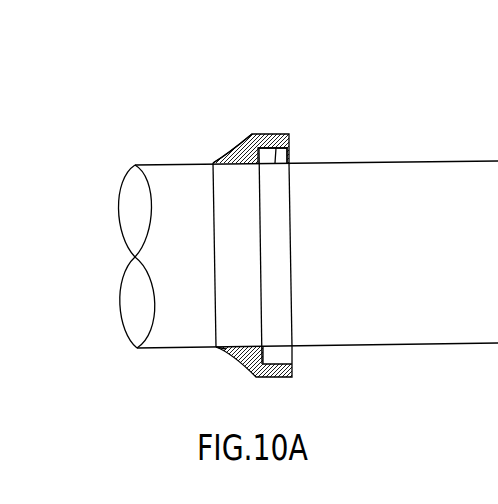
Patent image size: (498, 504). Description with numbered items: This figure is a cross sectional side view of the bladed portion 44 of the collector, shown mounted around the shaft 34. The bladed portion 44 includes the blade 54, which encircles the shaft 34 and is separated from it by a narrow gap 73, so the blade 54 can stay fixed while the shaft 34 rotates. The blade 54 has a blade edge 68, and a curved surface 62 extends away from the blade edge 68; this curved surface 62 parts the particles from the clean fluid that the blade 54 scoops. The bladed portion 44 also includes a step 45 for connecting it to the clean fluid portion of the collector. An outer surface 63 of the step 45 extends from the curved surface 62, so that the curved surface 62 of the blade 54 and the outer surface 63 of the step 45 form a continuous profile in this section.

The shaft 34 is at (416, 278).
The bladed portion 44 is at (195, 102).
The step 45 is at (290, 163).
The blade 54 is at (223, 158).
The curved surface 62 is at (238, 365).
The outer surface 63 is at (269, 134).
The blade edge 68 is at (213, 232).
The narrow gap 73 is at (216, 349).